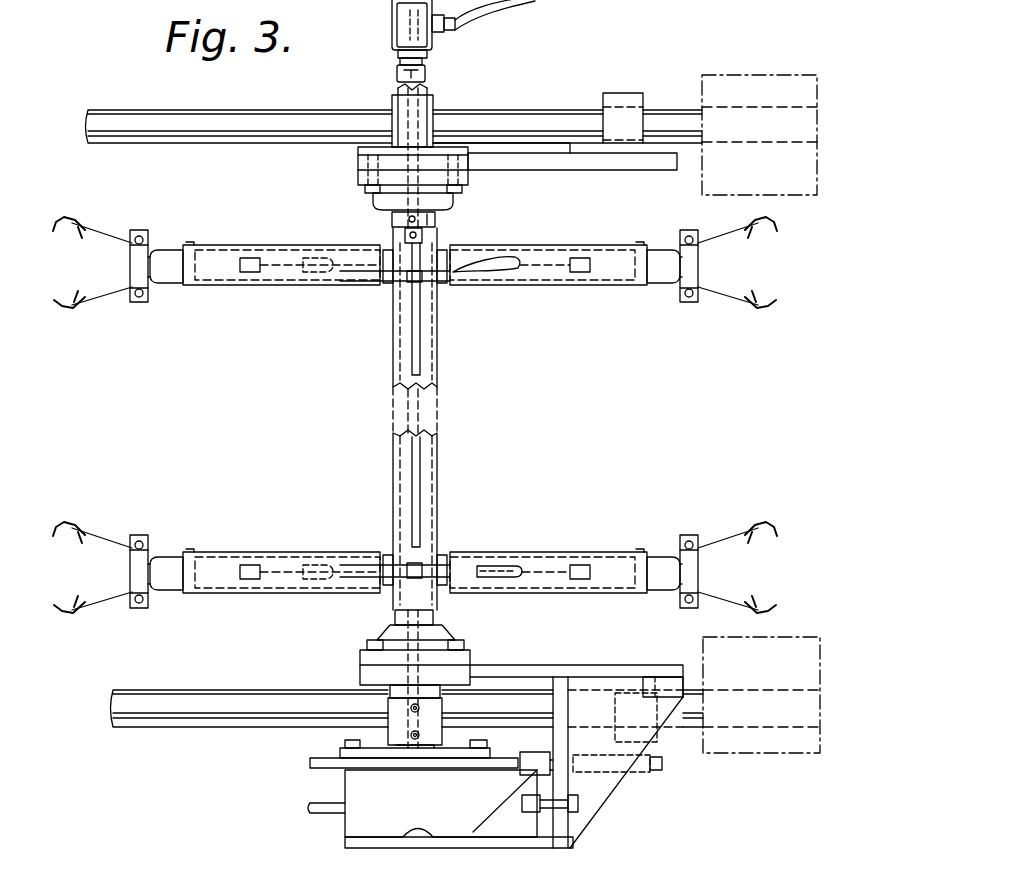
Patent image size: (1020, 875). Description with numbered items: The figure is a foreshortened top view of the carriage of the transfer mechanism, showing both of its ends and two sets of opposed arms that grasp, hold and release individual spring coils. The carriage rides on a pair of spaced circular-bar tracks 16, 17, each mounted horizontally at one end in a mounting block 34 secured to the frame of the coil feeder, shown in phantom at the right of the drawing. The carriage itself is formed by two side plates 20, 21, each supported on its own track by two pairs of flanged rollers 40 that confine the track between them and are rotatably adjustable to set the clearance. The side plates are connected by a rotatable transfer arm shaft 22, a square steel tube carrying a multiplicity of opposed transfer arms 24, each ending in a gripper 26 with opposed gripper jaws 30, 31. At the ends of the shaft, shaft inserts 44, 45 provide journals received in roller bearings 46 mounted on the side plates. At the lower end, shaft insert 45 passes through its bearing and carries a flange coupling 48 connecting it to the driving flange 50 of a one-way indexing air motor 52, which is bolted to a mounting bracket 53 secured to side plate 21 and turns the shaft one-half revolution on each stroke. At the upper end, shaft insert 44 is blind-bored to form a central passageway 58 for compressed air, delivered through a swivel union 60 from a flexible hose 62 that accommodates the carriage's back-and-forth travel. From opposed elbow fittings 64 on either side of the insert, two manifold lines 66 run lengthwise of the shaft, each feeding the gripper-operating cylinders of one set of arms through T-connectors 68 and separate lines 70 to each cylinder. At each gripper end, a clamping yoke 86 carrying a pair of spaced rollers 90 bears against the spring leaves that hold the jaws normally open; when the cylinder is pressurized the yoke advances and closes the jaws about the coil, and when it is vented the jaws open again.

The track 16 is at (128, 110).
The track 17 is at (162, 690).
The side plate 20 is at (530, 170).
The side plate 21 is at (578, 665).
The transfer arm shaft 22 is at (437, 358).
The transfer arm 24 is at (618, 552).
The gripper 26 is at (93, 324).
The gripper jaw 30 is at (770, 230).
The gripper jaw 31 is at (772, 303).
The mounting block 34 is at (752, 80).
The flanged rollers 40 is at (608, 93).
The shaft insert 44 is at (400, 146).
The shaft insert 45 is at (395, 600).
The roller bearing 46 is at (376, 197).
The flange coupling 48 is at (375, 758).
The driving flange 50 is at (310, 765).
The indexing air motor 52 is at (345, 826).
The mounting bracket 53 is at (600, 808).
The central passageway 58 is at (440, 203).
The swivel union 60 is at (392, 22).
The flexible hose 62 is at (530, 2).
The elbow fitting 64 is at (405, 235).
The manifold line 66 is at (412, 328).
The T-connector 68 is at (425, 285).
The line 70 is at (497, 272).
The clamping yoke 86 is at (698, 260).
The roller 90 is at (141, 229).